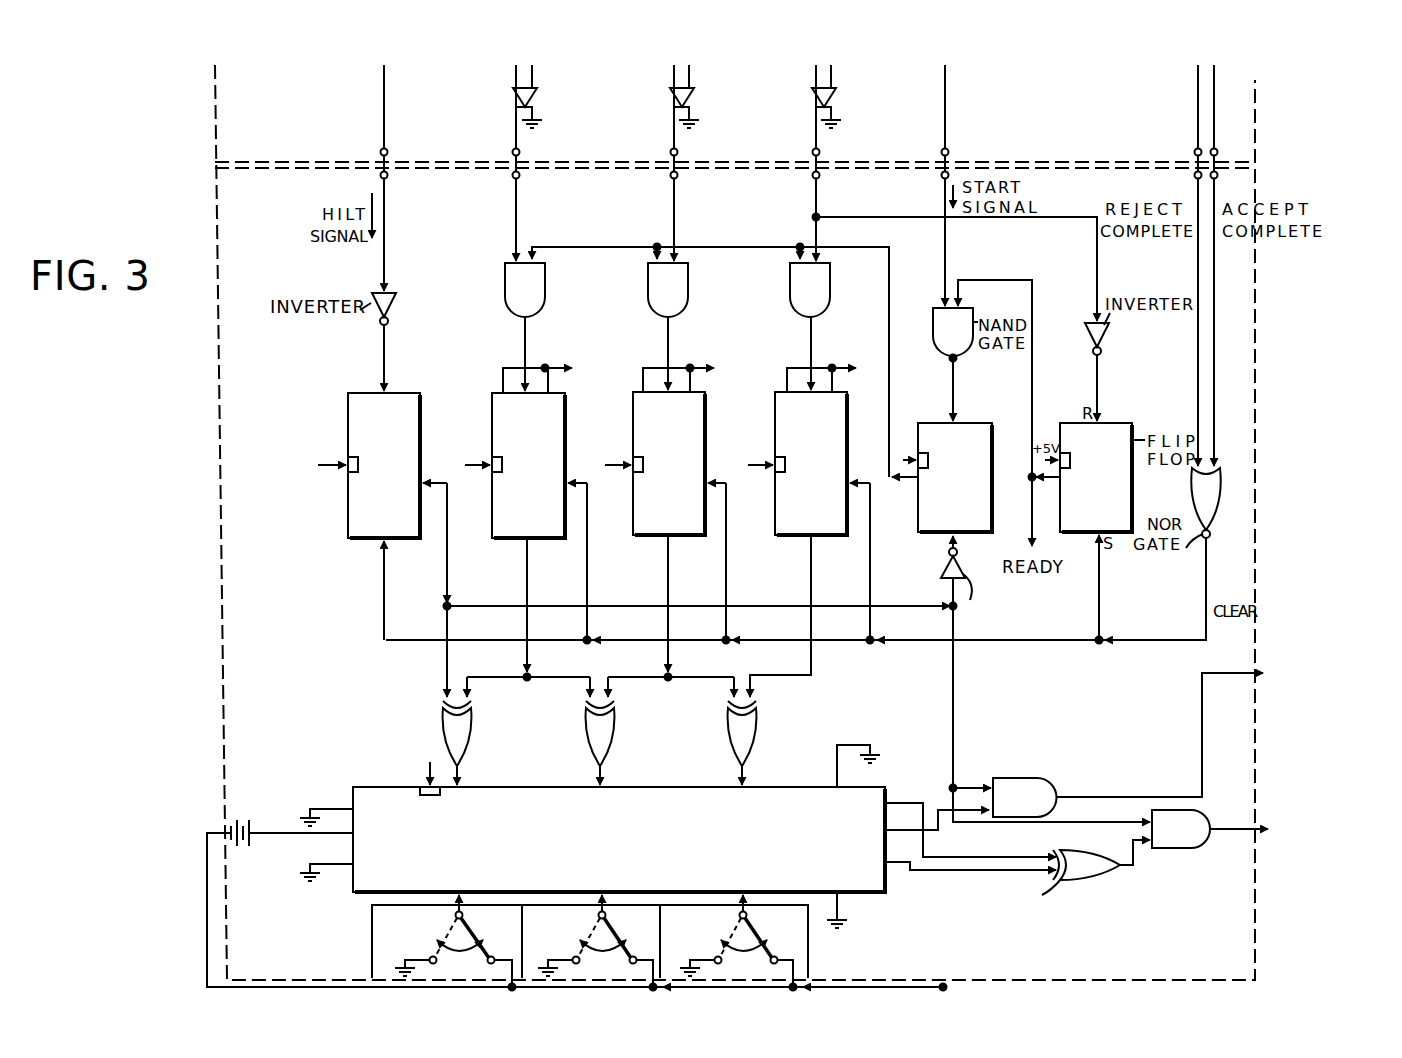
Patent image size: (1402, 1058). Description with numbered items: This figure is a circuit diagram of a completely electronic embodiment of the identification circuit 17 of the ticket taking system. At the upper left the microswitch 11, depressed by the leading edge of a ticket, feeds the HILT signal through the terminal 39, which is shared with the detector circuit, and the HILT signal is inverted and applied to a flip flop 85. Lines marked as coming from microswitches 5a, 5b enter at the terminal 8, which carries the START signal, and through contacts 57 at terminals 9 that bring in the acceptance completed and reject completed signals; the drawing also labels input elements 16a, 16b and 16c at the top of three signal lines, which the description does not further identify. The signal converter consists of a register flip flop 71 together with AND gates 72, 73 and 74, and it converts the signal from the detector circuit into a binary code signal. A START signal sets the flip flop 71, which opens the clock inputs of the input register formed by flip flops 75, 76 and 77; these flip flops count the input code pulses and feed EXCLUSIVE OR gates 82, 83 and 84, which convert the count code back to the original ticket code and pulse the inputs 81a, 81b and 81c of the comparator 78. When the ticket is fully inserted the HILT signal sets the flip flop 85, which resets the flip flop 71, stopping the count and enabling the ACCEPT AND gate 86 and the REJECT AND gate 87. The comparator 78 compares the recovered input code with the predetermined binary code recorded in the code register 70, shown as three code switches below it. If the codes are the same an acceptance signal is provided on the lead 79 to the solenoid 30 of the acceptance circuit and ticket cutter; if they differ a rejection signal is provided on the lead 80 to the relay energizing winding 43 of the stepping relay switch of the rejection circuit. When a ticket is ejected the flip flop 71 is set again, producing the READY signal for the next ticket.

The microswitch 11 is at (380, 139).
The terminal 39 is at (388, 152).
The photodiode 16a is at (537, 96).
The photodiode 16b is at (694, 96).
The photodiode 16c is at (836, 96).
The terminal 8 is at (941, 150).
The contacts 9 is at (1194, 150).
The contacts 57 is at (1265, 152).
The microswitch 5a is at (1005, 97).
The microswitch 5b is at (1265, 97).
The AND gate 72 is at (540, 284).
The AND gate 73 is at (683, 284).
The AND gate 74 is at (825, 284).
The flip flop 85 is at (418, 418).
The flip flop 75 is at (560, 418).
The flip flop 76 is at (700, 418).
The flip flop 77 is at (842, 418).
The flip flop 71 is at (996, 432).
The EXCLUSIVE OR gate 82 is at (510, 743).
The EXCLUSIVE OR gate 83 is at (650, 743).
The EXCLUSIVE OR gate 84 is at (796, 743).
The comparator input 81a is at (462, 786).
The comparator input 81b is at (605, 786).
The comparator input 81c is at (747, 786).
The comparator 78 is at (350, 792).
The code register 70 is at (808, 945).
The ACCEPT AND gate 86 is at (1062, 770).
The REJECT AND gate 87 is at (1182, 842).
The lead 79 is at (1200, 698).
The lead 80 is at (1237, 829).
The solenoid 30 is at (1322, 680).
The relay energizing winding 43 is at (1327, 857).
The identification circuit 17 is at (1233, 953).